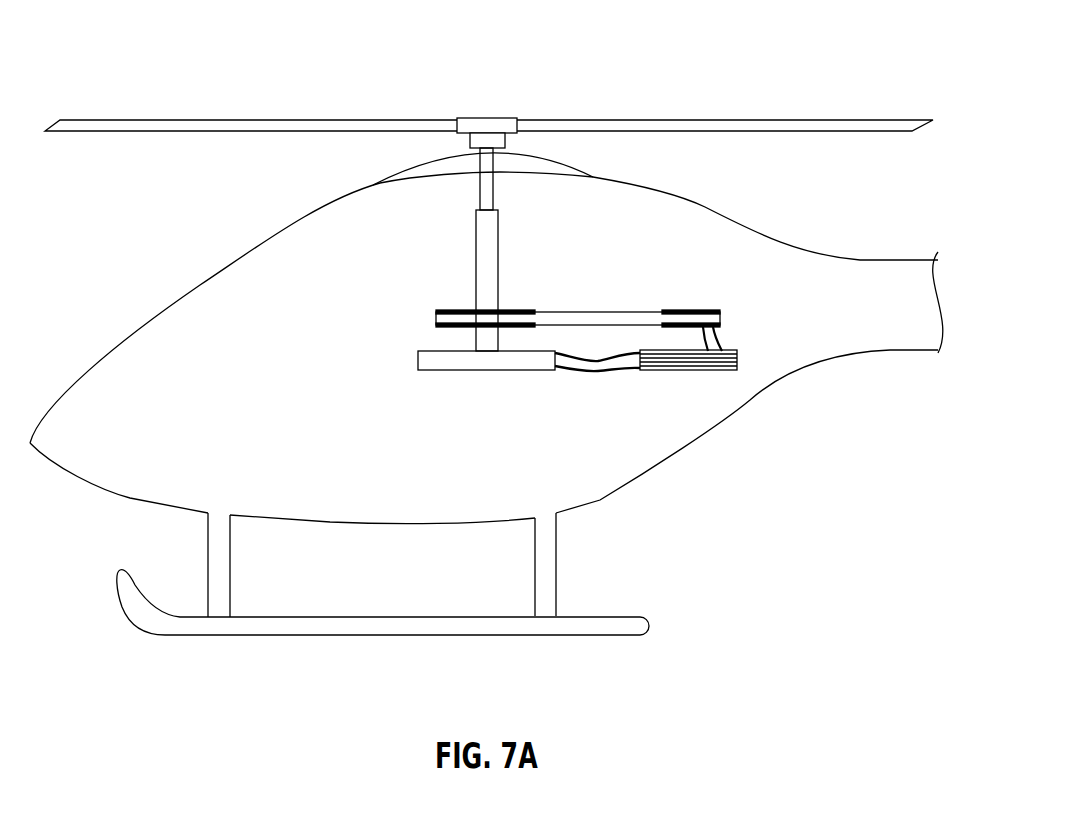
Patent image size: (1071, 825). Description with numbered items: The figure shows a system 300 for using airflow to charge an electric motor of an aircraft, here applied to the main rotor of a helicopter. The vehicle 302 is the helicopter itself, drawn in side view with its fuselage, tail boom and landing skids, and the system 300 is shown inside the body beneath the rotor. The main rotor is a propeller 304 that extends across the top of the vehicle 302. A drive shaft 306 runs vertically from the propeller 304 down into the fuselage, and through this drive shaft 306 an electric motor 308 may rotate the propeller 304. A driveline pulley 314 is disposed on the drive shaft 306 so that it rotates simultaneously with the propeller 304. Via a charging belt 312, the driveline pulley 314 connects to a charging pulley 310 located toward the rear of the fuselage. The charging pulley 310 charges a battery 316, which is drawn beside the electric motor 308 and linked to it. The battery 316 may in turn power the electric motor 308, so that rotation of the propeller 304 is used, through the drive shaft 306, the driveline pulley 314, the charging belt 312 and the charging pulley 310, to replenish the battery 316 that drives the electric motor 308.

The system 300 is at (666, 42).
The vehicle 302 is at (238, 258).
The propeller 304 is at (235, 118).
The drive shaft 306 is at (476, 247).
The electric motor 308 is at (473, 370).
The charging pulley 310 is at (720, 318).
The charging belt 312 is at (563, 310).
The driveline pulley 314 is at (436, 317).
The battery 316 is at (693, 370).